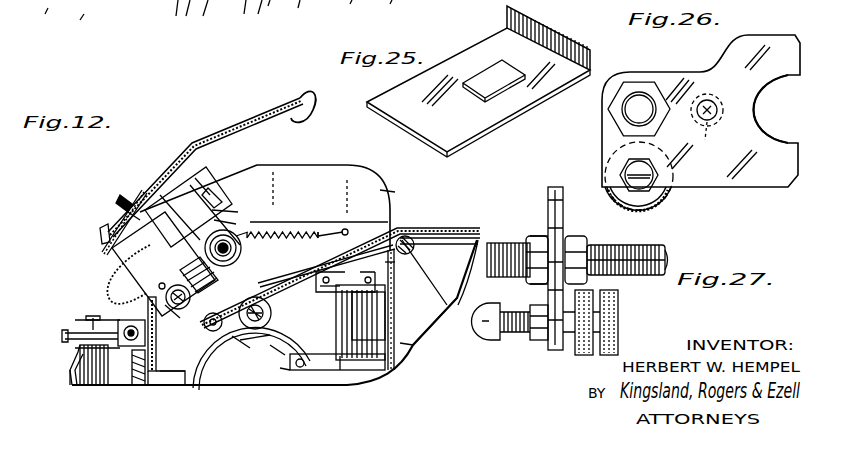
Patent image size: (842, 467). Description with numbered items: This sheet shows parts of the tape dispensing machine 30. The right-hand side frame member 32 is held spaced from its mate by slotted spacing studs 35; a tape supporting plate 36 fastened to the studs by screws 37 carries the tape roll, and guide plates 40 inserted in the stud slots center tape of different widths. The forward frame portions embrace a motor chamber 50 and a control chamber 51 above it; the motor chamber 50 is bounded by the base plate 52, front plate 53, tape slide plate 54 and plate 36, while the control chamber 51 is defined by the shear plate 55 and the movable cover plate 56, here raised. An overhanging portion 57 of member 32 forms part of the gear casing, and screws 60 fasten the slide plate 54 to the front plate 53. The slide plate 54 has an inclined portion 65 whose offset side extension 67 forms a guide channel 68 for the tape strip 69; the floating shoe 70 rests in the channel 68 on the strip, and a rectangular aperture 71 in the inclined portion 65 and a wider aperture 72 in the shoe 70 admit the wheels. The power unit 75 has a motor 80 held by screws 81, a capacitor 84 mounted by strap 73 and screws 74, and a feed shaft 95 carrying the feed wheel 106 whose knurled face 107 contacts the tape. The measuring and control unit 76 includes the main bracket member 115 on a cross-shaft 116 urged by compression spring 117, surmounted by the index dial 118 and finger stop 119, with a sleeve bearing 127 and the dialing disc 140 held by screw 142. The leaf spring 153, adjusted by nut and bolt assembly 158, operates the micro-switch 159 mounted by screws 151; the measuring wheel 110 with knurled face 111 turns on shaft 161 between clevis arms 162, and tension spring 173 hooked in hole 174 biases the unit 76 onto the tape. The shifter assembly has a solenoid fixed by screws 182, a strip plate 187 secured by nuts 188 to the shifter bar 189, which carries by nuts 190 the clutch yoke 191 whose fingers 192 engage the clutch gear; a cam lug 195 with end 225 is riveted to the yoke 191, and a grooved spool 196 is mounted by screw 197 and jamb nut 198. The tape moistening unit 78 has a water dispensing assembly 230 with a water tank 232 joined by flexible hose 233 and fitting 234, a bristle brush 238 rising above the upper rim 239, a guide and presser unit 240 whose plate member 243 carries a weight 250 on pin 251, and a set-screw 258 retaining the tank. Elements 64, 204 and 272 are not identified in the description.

In FIG. 12, the tape dispensing machine 30 is at (410, 374).
In FIG. 12, the right-hand side frame member 32 is at (385, 192).
In FIG. 12, the spacing studs 35 is at (410, 236).
In FIG. 12, the tape supporting plate 36 is at (408, 352).
In FIG. 12, the screws 37 is at (398, 260).
In FIG. 12, the guide plates 40 is at (452, 308).
In FIG. 12, the motor chamber 50 is at (205, 400).
In FIG. 12, the control chamber 51 is at (350, 163).
In FIG. 12, the base plate 52 is at (279, 9).
In FIG. 12, the front plate 53 is at (394, 4).
In FIG. 12, the tape slide plate 54 is at (375, 248).
In FIG. 12, the shear plate 55 is at (147, 306).
In FIG. 12, the movable cover plate 56 is at (286, 96).
In FIG. 12, the overhanging outwardly extending portion 57 is at (375, 186).
In FIG. 12, the screws 60 is at (168, 388).
In FIG. 12, the frame member 64 is at (351, 4).
In FIG. 12, the inclined portion 65 is at (240, 345).
In FIG. 12, the side extension 67 is at (316, 266).
In FIG. 12, the guide channel 68 is at (233, 312).
In FIG. 12, the tape strip 69 is at (435, 236).
In FIG. 25, the floating shoe 70 is at (488, 60).
In FIG. 12, the rectangular aperture 71 is at (225, 325).
In FIG. 25, the aperture 72 is at (488, 62).
In FIG. 12, the strap 73 is at (350, 372).
In FIG. 12, the screws 74 is at (303, 371).
In FIG. 12, the power unit 75 is at (304, 414).
In FIG. 12, the measuring and control unit 76 is at (167, 200).
In FIG. 12, the tape moistening unit 78 is at (63, 385).
In FIG. 12, the motor 80 is at (233, 8).
In FIG. 12, the screws 81 is at (260, 18).
In FIG. 12, the starting and running capacitor 84 is at (402, 344).
In FIG. 12, the feed shaft 95 is at (258, 332).
In FIG. 12, the feed wheel 106 is at (242, 330).
In FIG. 12, the knurled peripheral face 107 is at (270, 302).
In FIG. 12, the measuring wheel 110 is at (240, 254).
In FIG. 12, the knurled face 111 is at (271, 244).
In FIG. 12, the main bracket member 115 is at (140, 253).
In FIG. 12, the cross-shaft 116 is at (166, 292).
In FIG. 12, the compression spring 117 is at (173, 312).
In FIG. 12, the circular numbered index dial 118 is at (180, 152).
In FIG. 12, the finger stop 119 is at (102, 228).
In FIG. 12, the sleeve bearing 127 is at (143, 212).
In FIG. 12, the dialing disc 140 is at (160, 175).
In FIG. 12, the screw 142 is at (124, 198).
In FIG. 12, the screws 151 is at (205, 192).
In FIG. 12, the leaf spring 153 is at (222, 197).
In FIG. 12, the nut and bolt assembly 158 is at (265, 236).
In FIG. 12, the micro-switch 159 is at (222, 215).
In FIG. 12, the shaft 161 is at (214, 243).
In FIG. 12, the clevis arm 162 is at (190, 370).
In FIG. 12, the tension spring 173 is at (302, 228).
In FIG. 12, the hole 174 is at (347, 228).
In FIG. 12, the screws 182 is at (369, 274).
In FIG. 12, the strip plate 187 is at (378, 305).
In FIG. 12, the nuts 188 is at (336, 350).
In FIG. 12, the shifter bar 189 is at (275, 355).
In FIG. 26, the shifter bar 189 is at (630, 115).
In FIG. 27, the shifter bar 189 is at (660, 245).
In FIG. 26, the nuts 190 is at (632, 88).
In FIG. 27, the nuts 190 is at (530, 238).
In FIG. 26, the clutch yoke 191 is at (785, 36).
In FIG. 27, the clutch yoke 191 is at (548, 230).
In FIG. 26, the fingers 192 is at (788, 142).
In FIG. 27, the fingers 192 is at (550, 205).
In FIG. 26, the cam lug 195 is at (705, 128).
In FIG. 27, the cam lug 195 is at (570, 262).
In FIG. 26, the grooved disc 196 is at (675, 203).
In FIG. 27, the grooved disc 196 is at (620, 308).
In FIG. 26, the screw 197 is at (620, 164).
In FIG. 27, the screw 197 is at (520, 342).
In FIG. 26, the jamb nut 198 is at (626, 176).
In FIG. 27, the jamb nut 198 is at (546, 345).
In FIG. 12, the block 204 is at (112, 388).
In FIG. 26, the end of cam lug 225 is at (712, 100).
In FIG. 27, the end of cam lug 225 is at (641, 236).
In FIG. 12, the water dispensing assembly 230 is at (62, 375).
In FIG. 12, the water tank 232 is at (142, 388).
In FIG. 12, the flexible hose 233 is at (247, 22).
In FIG. 12, the fitting 234 is at (75, 25).
In FIG. 12, the bristle brush 238 is at (90, 388).
In FIG. 12, the upper rim 239 is at (70, 349).
In FIG. 12, the guide and presser unit 240 is at (79, 311).
In FIG. 12, the plate member 243 is at (68, 323).
In FIG. 12, the weight 250 is at (118, 322).
In FIG. 12, the pin 251 is at (62, 336).
In FIG. 12, the set-screw 258 is at (41, 8).
In FIG. 12, the strip 272 is at (462, 244).